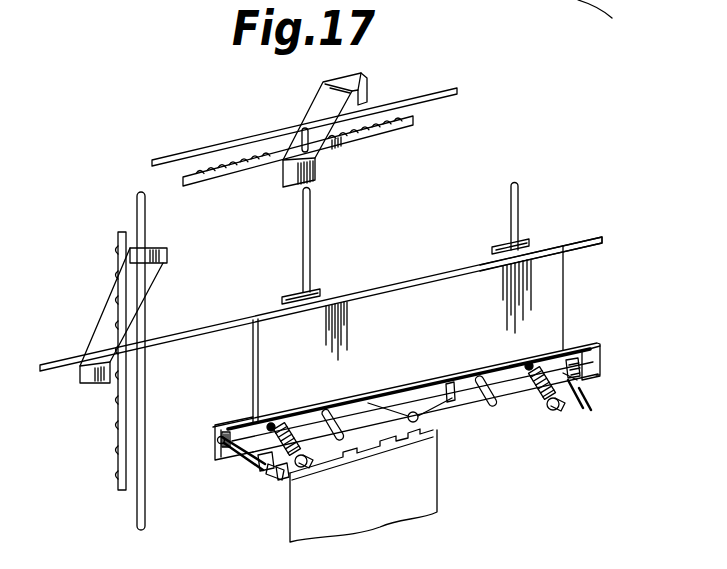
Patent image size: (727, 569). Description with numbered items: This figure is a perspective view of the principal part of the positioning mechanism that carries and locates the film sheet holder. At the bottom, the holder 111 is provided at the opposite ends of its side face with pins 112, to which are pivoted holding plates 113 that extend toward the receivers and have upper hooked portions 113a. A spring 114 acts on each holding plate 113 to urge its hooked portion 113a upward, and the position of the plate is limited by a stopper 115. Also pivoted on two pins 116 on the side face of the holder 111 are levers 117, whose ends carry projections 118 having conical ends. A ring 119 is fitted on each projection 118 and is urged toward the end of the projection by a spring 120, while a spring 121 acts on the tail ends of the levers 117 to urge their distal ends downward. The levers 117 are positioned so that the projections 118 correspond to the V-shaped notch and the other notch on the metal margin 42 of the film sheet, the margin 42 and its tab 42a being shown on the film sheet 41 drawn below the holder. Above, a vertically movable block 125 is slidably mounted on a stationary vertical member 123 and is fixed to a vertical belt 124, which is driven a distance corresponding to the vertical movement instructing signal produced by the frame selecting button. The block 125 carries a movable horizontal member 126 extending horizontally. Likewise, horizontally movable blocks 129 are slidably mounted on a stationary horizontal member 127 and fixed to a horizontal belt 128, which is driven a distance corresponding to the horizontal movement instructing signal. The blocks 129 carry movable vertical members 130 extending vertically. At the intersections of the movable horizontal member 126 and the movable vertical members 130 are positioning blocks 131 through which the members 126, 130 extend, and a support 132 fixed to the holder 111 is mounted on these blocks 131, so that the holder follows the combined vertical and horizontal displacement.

The plate 41 is at (380, 486).
The metal margin 42 is at (398, 442).
The tab 42a is at (282, 482).
The holder 111 is at (403, 392).
The pins 112 is at (266, 471).
The holding plates 113 is at (246, 464).
The hooked portions 113a is at (286, 478).
The spring 114 is at (243, 420).
The stopper 115 is at (216, 450).
The pins 116 is at (320, 410).
The levers 117 is at (352, 398).
The projections 118 is at (316, 458).
The ring 119 is at (275, 424).
The spring 120 is at (267, 422).
The spring 121 is at (444, 406).
The stationary vertical member 123 is at (146, 209).
The vertical belt 124 is at (117, 262).
The vertically movable block 125 is at (100, 338).
The movable horizontal member 126 is at (191, 329).
The stationary horizontal member 127 is at (418, 97).
The horizontal belt 128 is at (383, 132).
The horizontally movable blocks 129 is at (318, 93).
The movable vertical members 130 is at (312, 220).
The positioning blocks 131 is at (290, 294).
The support 132 is at (546, 250).